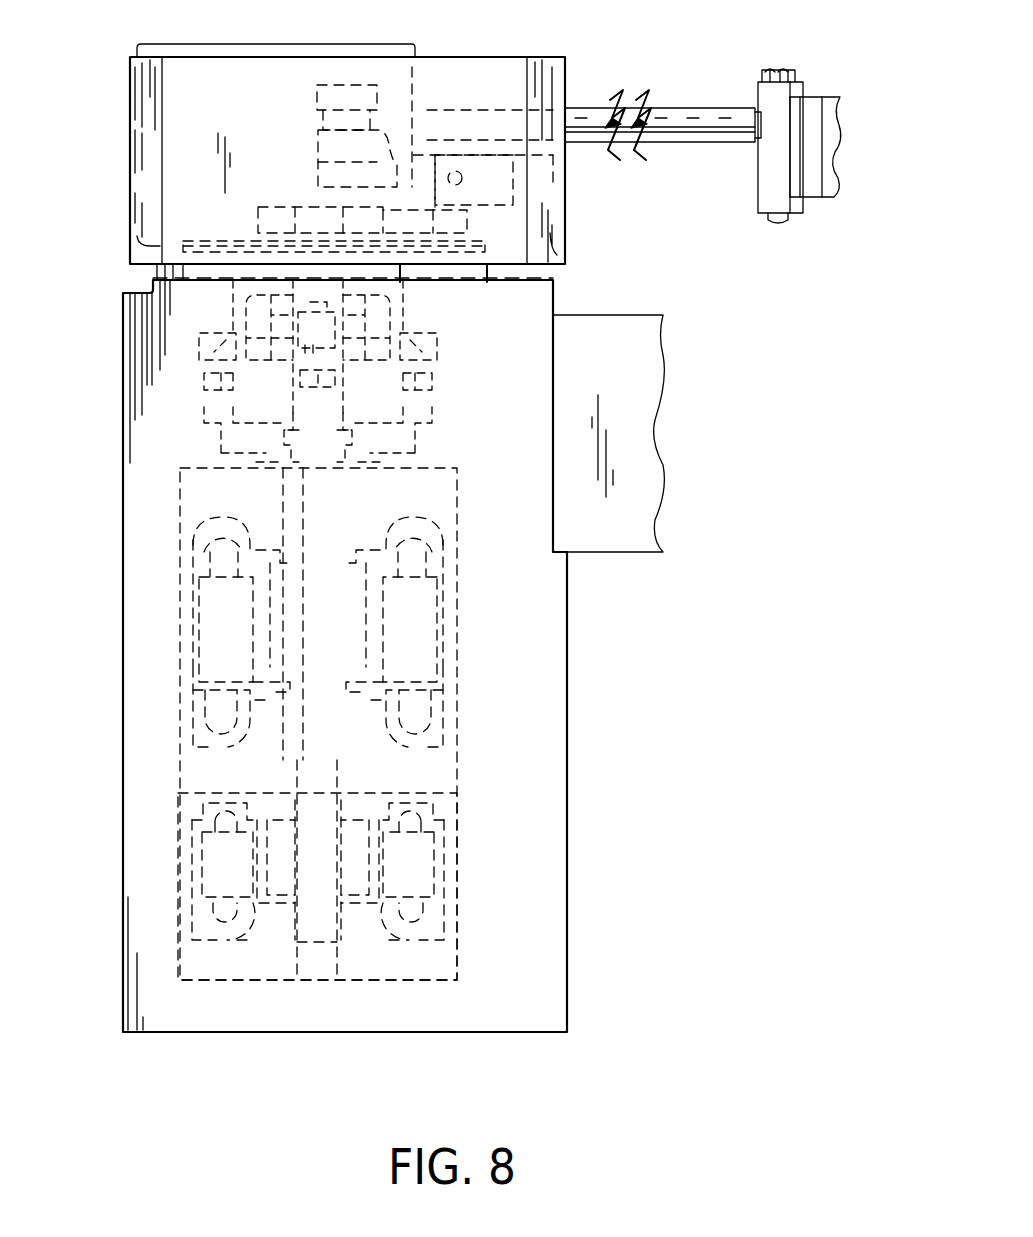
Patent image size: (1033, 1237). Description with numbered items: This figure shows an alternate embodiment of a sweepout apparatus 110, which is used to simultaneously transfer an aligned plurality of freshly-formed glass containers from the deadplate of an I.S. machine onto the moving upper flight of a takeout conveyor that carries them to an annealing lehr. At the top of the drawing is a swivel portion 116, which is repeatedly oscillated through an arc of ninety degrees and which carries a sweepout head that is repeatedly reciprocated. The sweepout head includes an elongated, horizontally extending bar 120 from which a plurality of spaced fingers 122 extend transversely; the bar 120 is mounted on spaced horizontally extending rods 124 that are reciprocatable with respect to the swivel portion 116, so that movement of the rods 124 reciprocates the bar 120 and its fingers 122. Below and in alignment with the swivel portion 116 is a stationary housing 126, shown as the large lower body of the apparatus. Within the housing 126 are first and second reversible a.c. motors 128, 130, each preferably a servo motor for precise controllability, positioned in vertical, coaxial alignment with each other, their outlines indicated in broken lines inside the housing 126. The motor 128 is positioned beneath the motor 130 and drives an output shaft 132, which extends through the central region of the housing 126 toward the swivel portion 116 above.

The sweepout apparatus 110 is at (108, 358).
The swivel portion 116 is at (128, 182).
The bar 120 is at (758, 175).
The fingers 122 is at (822, 97).
The rods 124 is at (698, 100).
The stationary housing 126 is at (569, 753).
The first reversible a.c. motor 128 is at (443, 838).
The second reversible a.c. motor 130 is at (437, 630).
The output shaft 132 is at (313, 953).